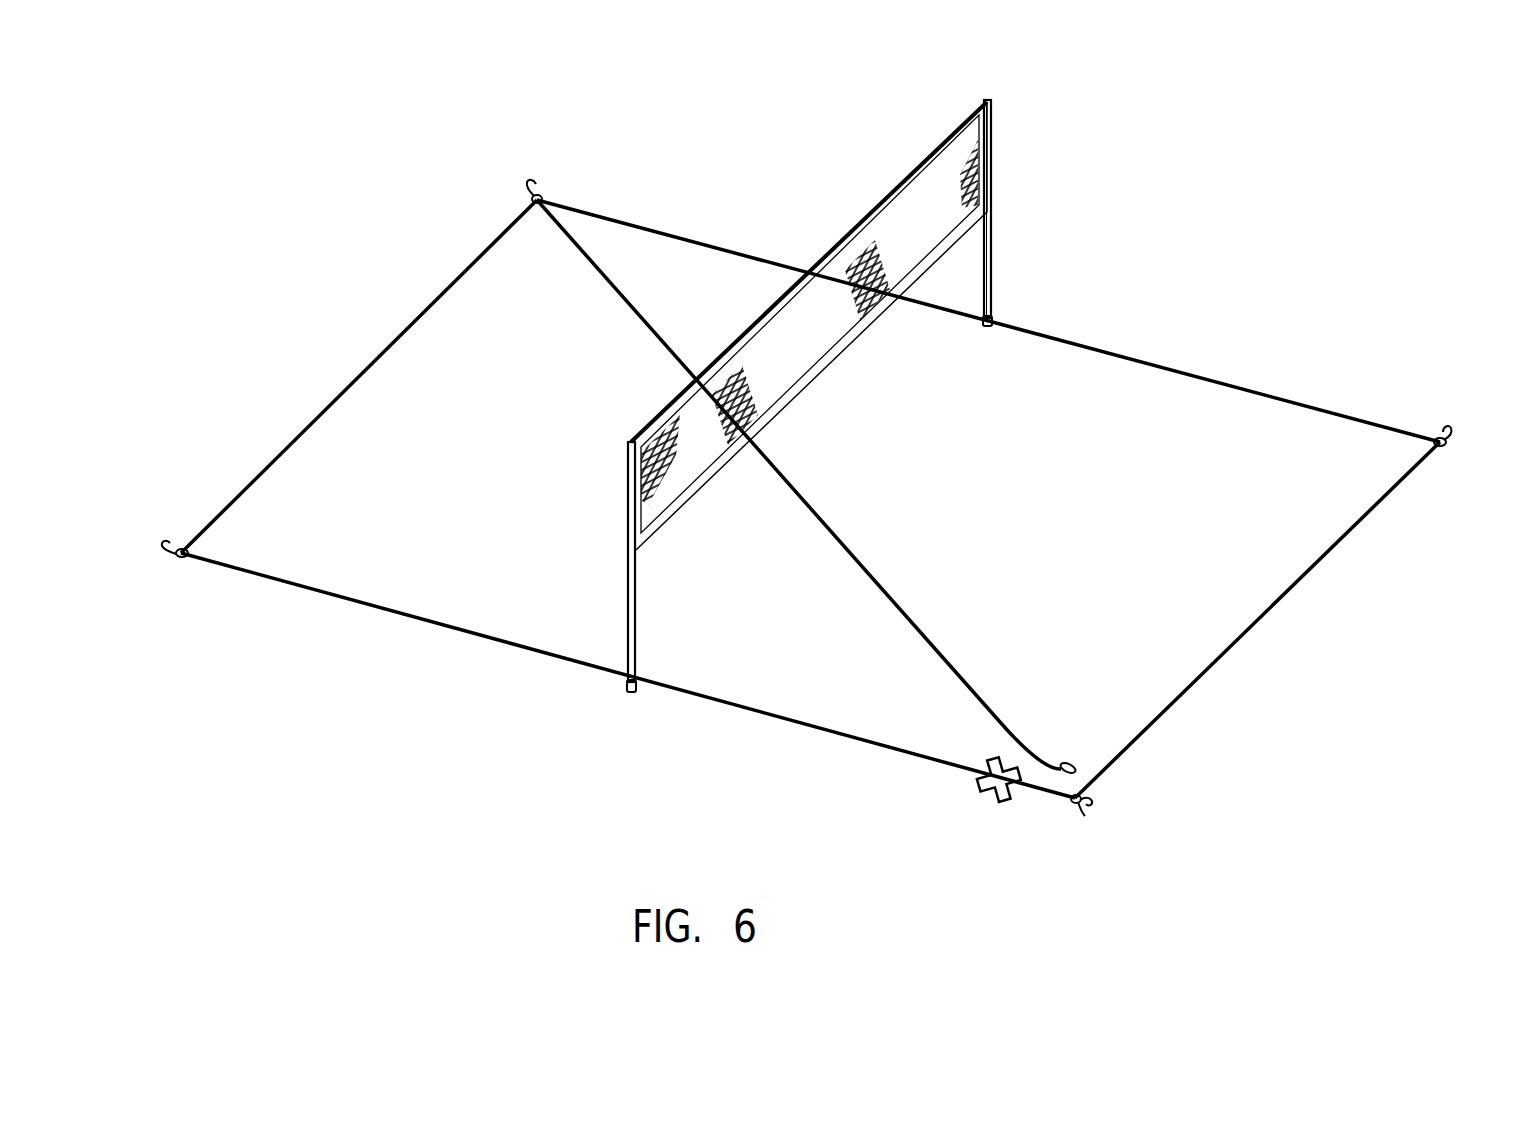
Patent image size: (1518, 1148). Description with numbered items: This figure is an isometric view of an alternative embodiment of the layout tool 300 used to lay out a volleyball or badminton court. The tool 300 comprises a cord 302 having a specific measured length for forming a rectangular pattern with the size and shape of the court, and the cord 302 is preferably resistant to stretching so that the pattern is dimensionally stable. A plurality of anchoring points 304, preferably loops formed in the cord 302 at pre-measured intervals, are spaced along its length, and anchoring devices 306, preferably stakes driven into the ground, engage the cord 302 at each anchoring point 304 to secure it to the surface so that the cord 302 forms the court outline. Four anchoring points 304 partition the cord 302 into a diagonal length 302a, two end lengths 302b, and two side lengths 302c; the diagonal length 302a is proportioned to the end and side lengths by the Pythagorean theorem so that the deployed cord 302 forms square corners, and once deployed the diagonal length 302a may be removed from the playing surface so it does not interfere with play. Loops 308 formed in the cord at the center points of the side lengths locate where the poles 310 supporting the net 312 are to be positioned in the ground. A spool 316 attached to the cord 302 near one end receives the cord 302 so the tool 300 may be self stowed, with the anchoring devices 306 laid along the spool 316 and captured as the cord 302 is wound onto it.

The tool 300 is at (1193, 215).
The cord 302 is at (1195, 374).
The diagonal length 302a is at (912, 604).
The end length 302b is at (375, 362).
The side length 302c is at (1102, 346).
The anchoring point 304 is at (548, 196).
The anchoring device 306 is at (534, 184).
The loop 308 is at (975, 314).
The pole 310 is at (993, 250).
The net 312 is at (972, 168).
The spool 316 is at (975, 790).